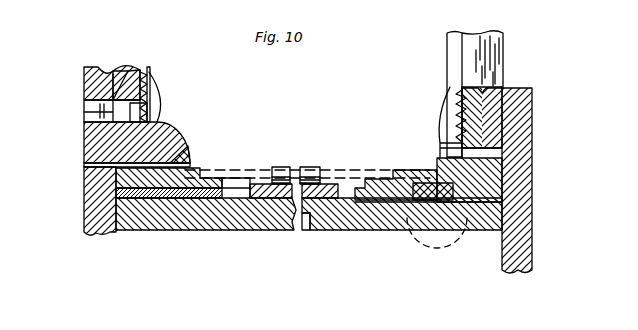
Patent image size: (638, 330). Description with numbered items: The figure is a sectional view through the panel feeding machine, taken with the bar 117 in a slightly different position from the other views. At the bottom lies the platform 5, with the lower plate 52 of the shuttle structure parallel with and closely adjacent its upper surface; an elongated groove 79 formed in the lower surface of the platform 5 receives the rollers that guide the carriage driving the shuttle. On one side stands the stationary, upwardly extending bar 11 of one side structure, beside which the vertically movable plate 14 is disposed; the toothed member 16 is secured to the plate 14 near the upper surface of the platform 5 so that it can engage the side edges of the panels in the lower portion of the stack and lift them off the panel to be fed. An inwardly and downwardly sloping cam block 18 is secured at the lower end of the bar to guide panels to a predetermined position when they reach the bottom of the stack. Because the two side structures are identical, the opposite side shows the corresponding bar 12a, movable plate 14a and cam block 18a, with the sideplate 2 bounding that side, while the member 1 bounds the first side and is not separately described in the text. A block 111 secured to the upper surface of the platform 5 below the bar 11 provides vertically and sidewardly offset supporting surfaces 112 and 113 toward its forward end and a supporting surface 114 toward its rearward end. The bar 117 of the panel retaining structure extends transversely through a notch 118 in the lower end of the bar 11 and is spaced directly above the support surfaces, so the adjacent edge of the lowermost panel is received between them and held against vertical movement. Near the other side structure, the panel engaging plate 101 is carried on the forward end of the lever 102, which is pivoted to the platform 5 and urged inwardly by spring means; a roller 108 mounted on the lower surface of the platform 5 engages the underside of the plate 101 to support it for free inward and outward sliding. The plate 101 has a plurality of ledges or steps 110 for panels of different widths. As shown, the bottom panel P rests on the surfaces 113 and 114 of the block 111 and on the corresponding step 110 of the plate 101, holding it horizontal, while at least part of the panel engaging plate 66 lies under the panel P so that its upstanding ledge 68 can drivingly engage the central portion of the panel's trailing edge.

The first housing member 1 is at (87, 85).
The sideplate 2 is at (518, 150).
The platform 5 is at (338, 231).
The bar 11 is at (135, 77).
The bar 12a is at (495, 52).
The vertically movable plate 14 is at (123, 118).
The vertically movable plate 14a is at (492, 97).
The toothed member 16 is at (148, 100).
The cam block 18 is at (158, 112).
The cam block 18a is at (445, 113).
The lower plate 52 is at (277, 200).
The panel engaging plate 66 is at (274, 168).
The upstanding ledge 68 is at (308, 167).
The elongated groove 79 is at (305, 232).
The panel engaging plate 101 is at (410, 170).
The lever 102 is at (410, 220).
The roller 108 is at (437, 260).
The ledges or steps 110 is at (437, 168).
The block 111 is at (163, 196).
The supporting surface 112 is at (180, 143).
The supporting surface 113 is at (197, 172).
The supporting surface 114 is at (218, 178).
The bar 117 is at (84, 150).
The notch 118 is at (102, 113).
The bottom panel P is at (265, 169).